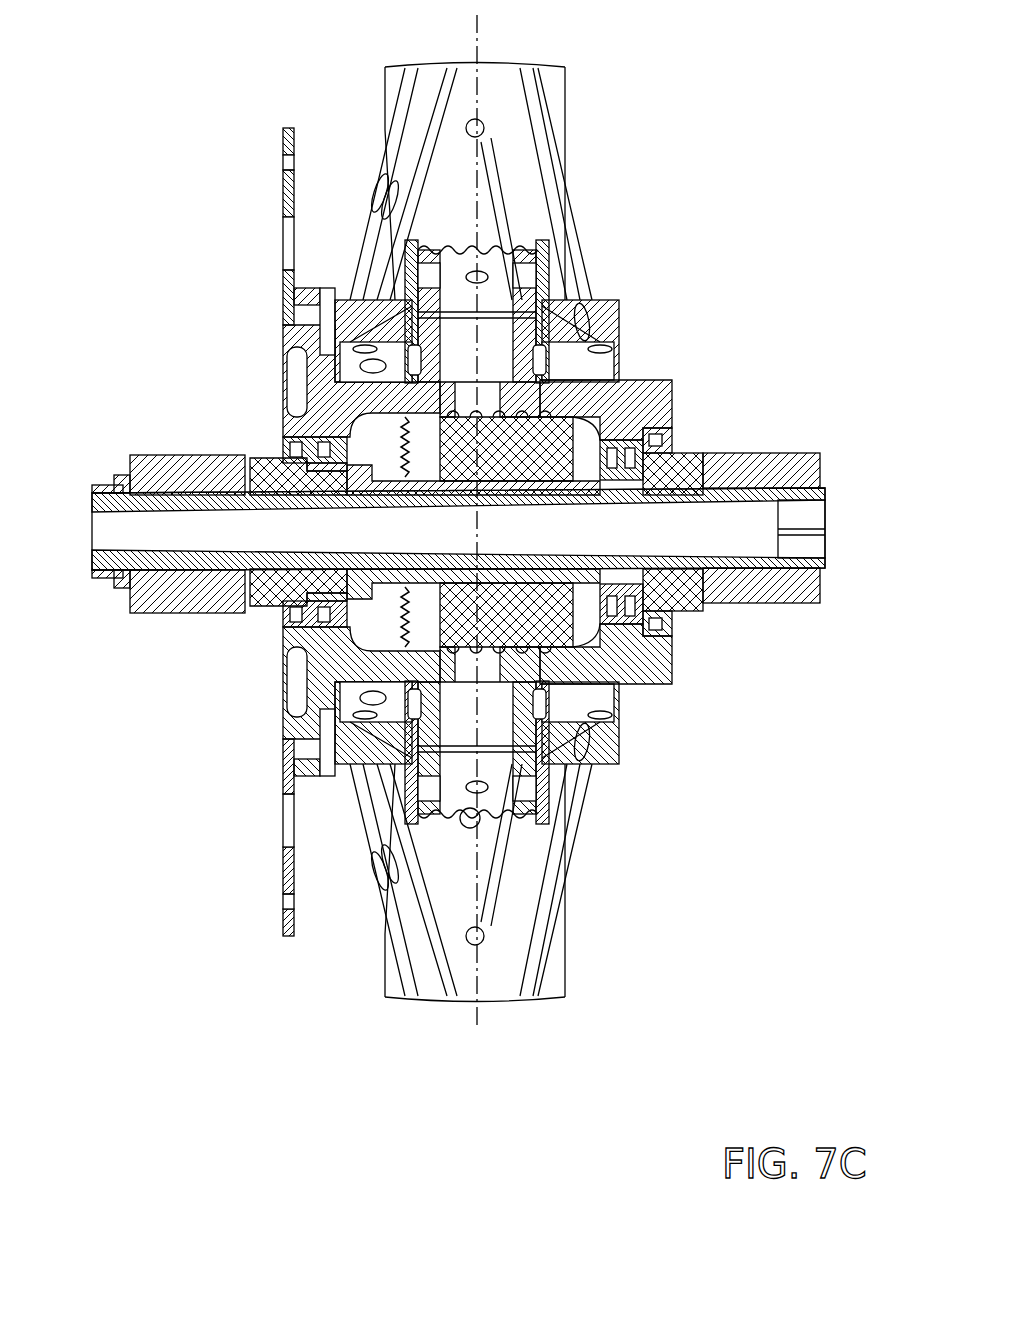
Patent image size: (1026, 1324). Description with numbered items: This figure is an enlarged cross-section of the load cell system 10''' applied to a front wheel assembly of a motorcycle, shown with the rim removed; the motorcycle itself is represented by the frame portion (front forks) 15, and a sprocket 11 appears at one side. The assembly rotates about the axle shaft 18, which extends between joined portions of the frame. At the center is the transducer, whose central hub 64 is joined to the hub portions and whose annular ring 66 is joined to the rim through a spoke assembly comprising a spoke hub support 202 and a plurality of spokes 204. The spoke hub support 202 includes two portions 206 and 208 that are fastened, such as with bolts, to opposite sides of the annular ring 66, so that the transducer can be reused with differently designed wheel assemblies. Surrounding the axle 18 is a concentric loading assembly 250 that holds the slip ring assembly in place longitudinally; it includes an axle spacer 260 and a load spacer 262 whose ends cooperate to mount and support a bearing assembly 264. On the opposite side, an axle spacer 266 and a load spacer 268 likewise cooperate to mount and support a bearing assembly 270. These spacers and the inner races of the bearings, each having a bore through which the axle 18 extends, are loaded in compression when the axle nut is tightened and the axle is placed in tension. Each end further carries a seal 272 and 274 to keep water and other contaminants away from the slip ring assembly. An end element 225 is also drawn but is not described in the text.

The load cell system 10''' is at (644, 522).
The sprocket 11 is at (283, 127).
The frame portion (front forks) 15 is at (780, 610).
The axle shaft 18 is at (822, 572).
The central hub 64 is at (533, 317).
The annular ring 66 is at (556, 185).
The spoke hub support 202 is at (607, 223).
The spokes 204 is at (543, 137).
The portion of spoke hub support 206 is at (617, 320).
The portion of spoke hub support 208 is at (350, 300).
The end cap 225 is at (100, 573).
The concentric loading assembly 250 is at (703, 618).
The axle spacer 260 is at (688, 603).
The load spacer 262 is at (672, 398).
The bearing assembly 264 is at (672, 430).
The axle spacer 266 is at (258, 605).
The load spacer 268 is at (352, 430).
The bearing assembly 270 is at (288, 707).
The seal 272 is at (672, 447).
The seal 274 is at (291, 444).